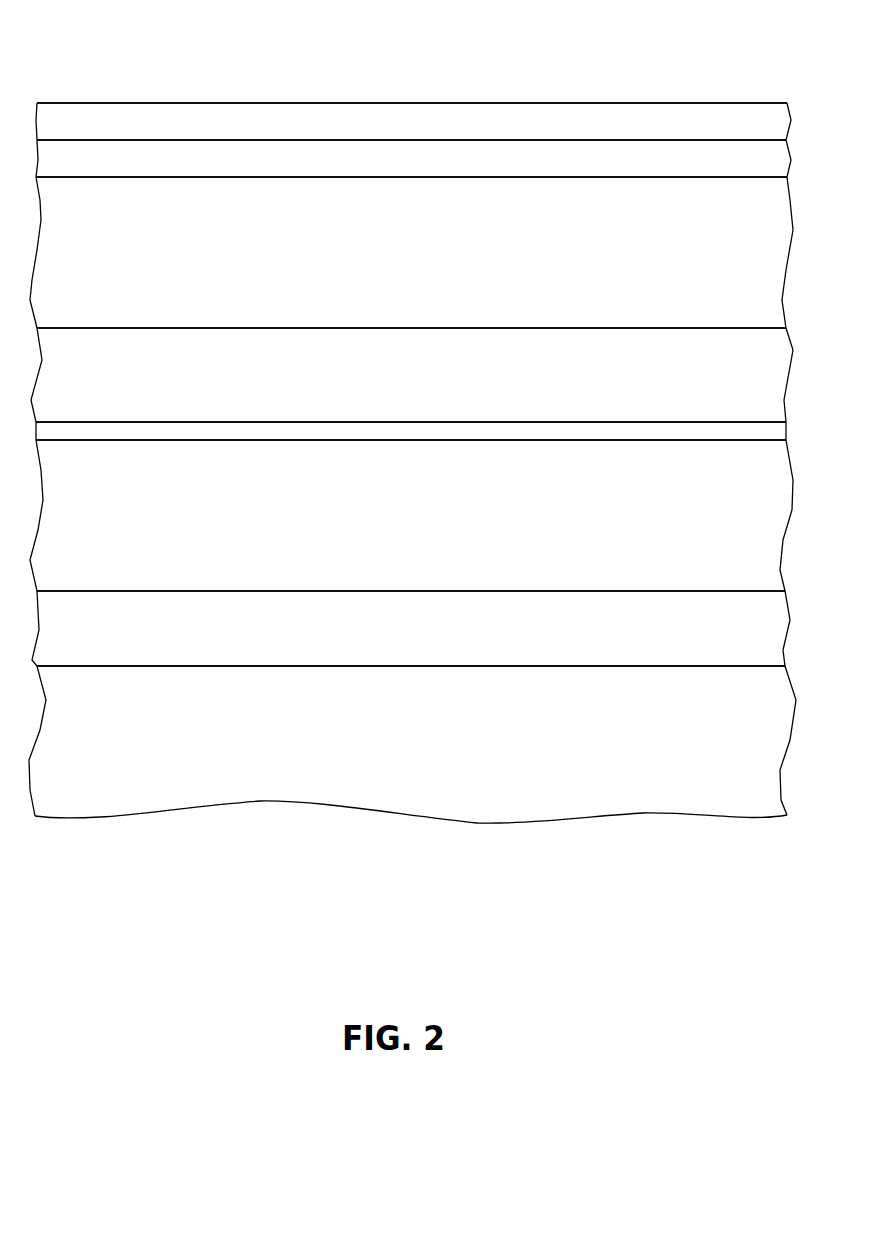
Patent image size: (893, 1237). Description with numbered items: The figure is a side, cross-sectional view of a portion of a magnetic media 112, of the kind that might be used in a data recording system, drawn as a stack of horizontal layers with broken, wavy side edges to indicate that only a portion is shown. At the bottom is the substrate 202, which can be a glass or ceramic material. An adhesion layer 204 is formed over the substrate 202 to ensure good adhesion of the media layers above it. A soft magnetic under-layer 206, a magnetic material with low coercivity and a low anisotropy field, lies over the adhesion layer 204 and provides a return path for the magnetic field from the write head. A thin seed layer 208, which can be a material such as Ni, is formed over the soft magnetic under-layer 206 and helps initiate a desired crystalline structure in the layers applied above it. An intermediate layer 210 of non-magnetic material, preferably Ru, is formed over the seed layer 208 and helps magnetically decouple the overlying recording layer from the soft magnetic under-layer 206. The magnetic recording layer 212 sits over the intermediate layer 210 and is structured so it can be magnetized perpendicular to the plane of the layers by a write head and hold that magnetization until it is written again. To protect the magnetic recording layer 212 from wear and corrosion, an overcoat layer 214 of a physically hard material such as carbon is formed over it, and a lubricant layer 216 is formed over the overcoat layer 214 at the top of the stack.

The magnetic media 112 is at (178, 104).
The substrate 202 is at (451, 732).
The adhesion layer 204 is at (451, 630).
The soft magnetic under-layer 206 is at (450, 512).
The seed layer 208 is at (552, 433).
The intermediate layer 210 is at (450, 372).
The magnetic recording layer 212 is at (450, 244).
The overcoat layer 214 is at (451, 159).
The lubricant layer 216 is at (452, 123).